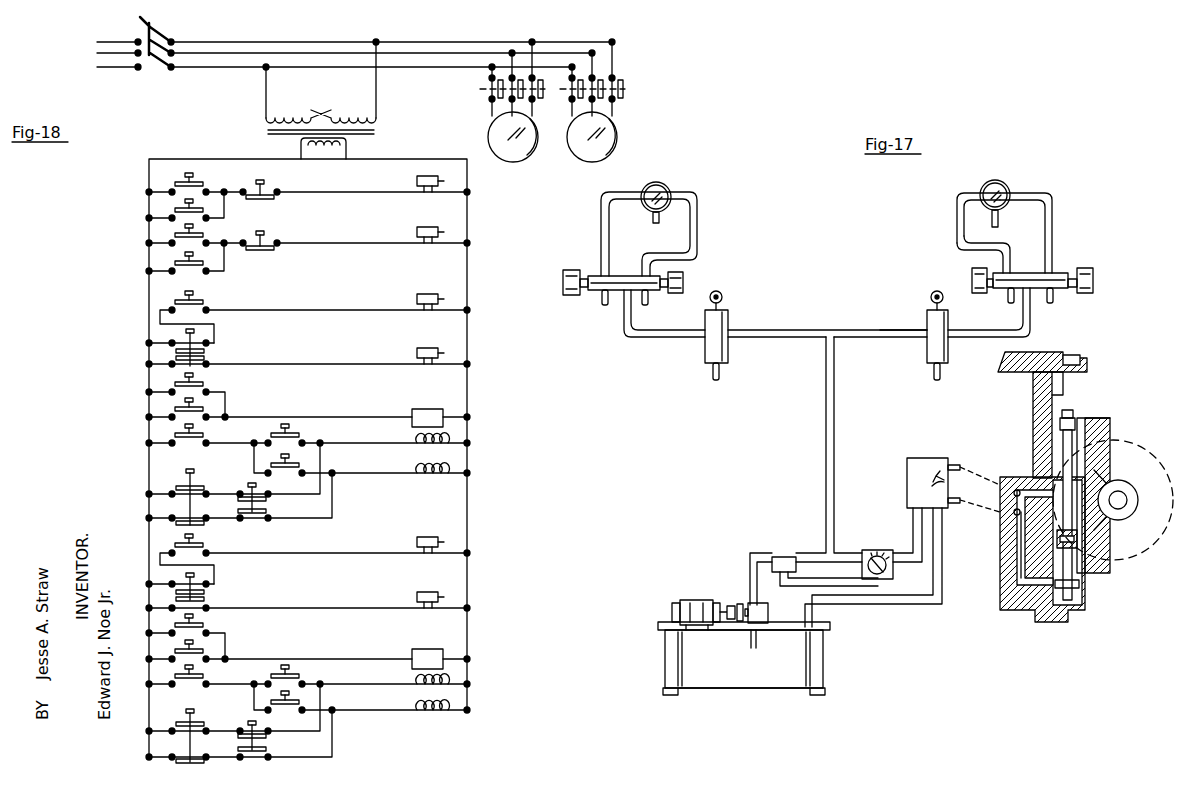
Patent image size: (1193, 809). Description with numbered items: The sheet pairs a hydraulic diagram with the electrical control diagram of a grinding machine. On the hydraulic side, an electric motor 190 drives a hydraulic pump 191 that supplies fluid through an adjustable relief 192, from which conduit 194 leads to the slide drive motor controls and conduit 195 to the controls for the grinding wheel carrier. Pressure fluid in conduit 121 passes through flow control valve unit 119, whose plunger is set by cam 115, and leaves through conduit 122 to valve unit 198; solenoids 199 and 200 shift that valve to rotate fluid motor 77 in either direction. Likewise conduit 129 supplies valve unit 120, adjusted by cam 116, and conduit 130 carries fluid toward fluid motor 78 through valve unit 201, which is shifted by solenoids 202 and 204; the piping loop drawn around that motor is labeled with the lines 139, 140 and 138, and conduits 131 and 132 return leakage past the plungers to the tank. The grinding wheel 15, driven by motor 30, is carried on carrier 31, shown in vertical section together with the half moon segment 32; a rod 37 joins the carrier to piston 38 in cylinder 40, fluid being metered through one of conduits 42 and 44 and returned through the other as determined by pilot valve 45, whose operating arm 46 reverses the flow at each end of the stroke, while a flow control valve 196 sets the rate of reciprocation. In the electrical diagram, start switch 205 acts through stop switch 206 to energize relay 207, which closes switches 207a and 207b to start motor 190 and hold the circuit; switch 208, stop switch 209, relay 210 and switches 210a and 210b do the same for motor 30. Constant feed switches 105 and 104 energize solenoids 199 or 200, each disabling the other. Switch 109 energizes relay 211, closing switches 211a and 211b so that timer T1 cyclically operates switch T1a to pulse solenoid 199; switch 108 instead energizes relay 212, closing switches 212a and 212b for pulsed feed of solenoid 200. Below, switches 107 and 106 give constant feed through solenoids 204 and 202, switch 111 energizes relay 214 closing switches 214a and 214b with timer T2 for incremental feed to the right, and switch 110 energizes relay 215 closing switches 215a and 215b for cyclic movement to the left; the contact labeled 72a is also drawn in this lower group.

In FIG. 18, the hydraulic motor start switch 205 is at (196, 178).
In FIG. 18, the stop switch 206 is at (264, 186).
In FIG. 18, the relay 207 is at (417, 182).
In FIG. 18, the switch 207a is at (478, 91).
In FIG. 18, the switch 207b is at (201, 206).
In FIG. 18, the start switch 208 is at (196, 230).
In FIG. 18, the stop switch 209 is at (264, 237).
In FIG. 18, the relay 210 is at (417, 233).
In FIG. 18, the switch 210a is at (566, 85).
In FIG. 18, the switch 210b is at (201, 259).
In FIG. 18, the switch 109 is at (196, 296).
In FIG. 18, the relay 211 is at (417, 300).
In FIG. 18, the incremental control switch 108 is at (206, 349).
In FIG. 18, the relay 212 is at (417, 355).
In FIG. 18, the switch 211a is at (200, 380).
In FIG. 18, the switch 212a is at (200, 404).
In FIG. 18, the timer unit T1 is at (420, 409).
In FIG. 18, the switch T1a is at (196, 437).
In FIG. 18, the switch 211b is at (290, 437).
In FIG. 18, the solenoid 199 is at (448, 445).
In FIG. 17, the solenoid 199 is at (563, 275).
In FIG. 18, the switch 212b is at (295, 460).
In FIG. 18, the solenoid 200 is at (442, 478).
In FIG. 17, the solenoid 200 is at (683, 276).
In FIG. 18, the constant feed control switch 105 is at (194, 505).
In FIG. 18, the constant feed control switch 104 is at (268, 505).
In FIG. 18, the relay 214 is at (420, 537).
In FIG. 18, the switch 111 is at (196, 548).
In FIG. 18, the switch 110 is at (204, 592).
In FIG. 18, the relay 215 is at (424, 592).
In FIG. 18, the switch 214a is at (200, 622).
In FIG. 18, the switch 215a is at (200, 648).
In FIG. 18, the timer unit T2 is at (421, 649).
In FIG. 18, the switch contact 72a is at (196, 678).
In FIG. 18, the switch 214b is at (290, 678).
In FIG. 18, the solenoid 204 is at (448, 684).
In FIG. 17, the solenoid 204 is at (1093, 278).
In FIG. 18, the switch 215b is at (295, 696).
In FIG. 18, the solenoid 202 is at (448, 714).
In FIG. 17, the solenoid 202 is at (972, 290).
In FIG. 18, the switch 107 is at (196, 714).
In FIG. 18, the switch 106 is at (258, 724).
In FIG. 18, the electric motor 190 is at (508, 161).
In FIG. 17, the electric motor 190 is at (688, 600).
In FIG. 18, the motor 30 is at (589, 161).
In FIG. 17, the fluid drive motor 77 is at (666, 188).
In FIG. 17, the fluid drive motor 78 is at (1004, 186).
In FIG. 17, the valve unit 198 is at (616, 276).
In FIG. 17, the cam 115 is at (722, 292).
In FIG. 17, the flow control valve unit 119 is at (729, 312).
In FIG. 17, the conduit 121 is at (762, 338).
In FIG. 17, the conduit 122 is at (666, 340).
In FIG. 17, the conduit 131 is at (724, 375).
In FIG. 17, the pipe 139 is at (950, 220).
In FIG. 17, the pipe 140 is at (998, 223).
In FIG. 17, the pipe 138 is at (1056, 222).
In FIG. 17, the cam 116 is at (932, 290).
In FIG. 17, the valve unit 201 is at (1016, 273).
In FIG. 17, the flow control valve unit 120 is at (949, 322).
In FIG. 17, the conduit 129 is at (886, 338).
In FIG. 17, the conduit 130 is at (980, 340).
In FIG. 17, the conduit 132 is at (934, 376).
In FIG. 17, the carrier 31 is at (1100, 418).
In FIG. 17, the rod 37 is at (1069, 530).
In FIG. 17, the pilot valve 45 is at (925, 458).
In FIG. 17, the conduit 42 is at (1025, 476).
In FIG. 17, the operating arm 46 is at (955, 503).
In FIG. 17, the grinding wheel 15 is at (1173, 510).
In FIG. 17, the adjustable relief 192 is at (784, 557).
In FIG. 17, the conduit 194 is at (836, 519).
In FIG. 17, the conduit 195 is at (856, 560).
In FIG. 17, the hydraulic pump 191 is at (722, 604).
In FIG. 17, the flow control valve 196 is at (878, 588).
In FIG. 17, the conduit 44 is at (1018, 552).
In FIG. 17, the piston 38 is at (1078, 540).
In FIG. 17, the cylinder 40 is at (1080, 585).
In FIG. 17, the half moon segment 32 is at (1005, 612).